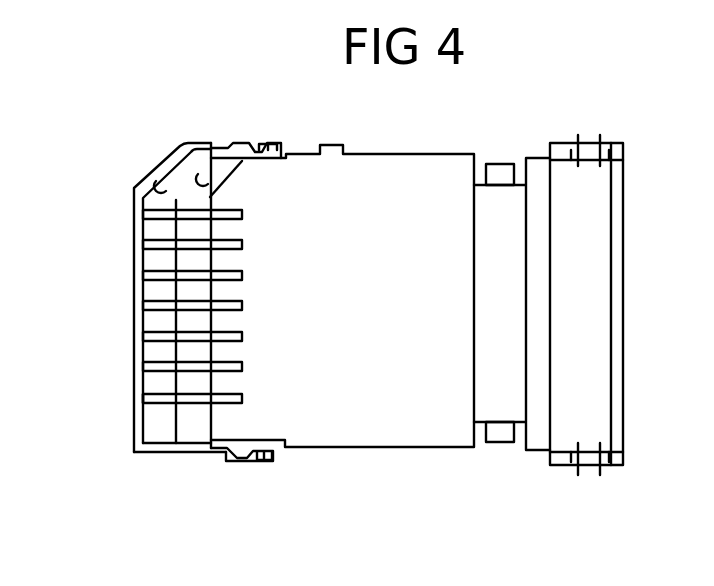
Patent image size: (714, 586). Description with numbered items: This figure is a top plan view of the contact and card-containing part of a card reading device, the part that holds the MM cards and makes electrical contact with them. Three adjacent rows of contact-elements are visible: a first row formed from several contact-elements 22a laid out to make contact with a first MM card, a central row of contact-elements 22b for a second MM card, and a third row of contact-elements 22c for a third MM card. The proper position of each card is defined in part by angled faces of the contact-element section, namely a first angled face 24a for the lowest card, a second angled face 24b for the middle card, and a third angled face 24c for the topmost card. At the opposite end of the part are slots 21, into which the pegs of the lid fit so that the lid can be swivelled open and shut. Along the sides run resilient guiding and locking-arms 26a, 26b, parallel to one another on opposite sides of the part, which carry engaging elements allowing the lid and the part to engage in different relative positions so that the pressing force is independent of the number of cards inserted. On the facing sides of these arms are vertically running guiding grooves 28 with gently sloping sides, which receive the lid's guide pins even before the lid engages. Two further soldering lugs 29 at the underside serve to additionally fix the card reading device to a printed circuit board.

The slots 21 is at (594, 140).
The contact-elements 22a is at (243, 398).
The contact-elements 22b is at (186, 410).
The contact-elements 22c is at (147, 397).
The first angled face 24a is at (230, 180).
The second angled face 24b is at (183, 163).
The third angled face 24c is at (153, 186).
The resilient guiding and locking-arm 26a is at (271, 143).
The resilient guiding and locking-arm 26b is at (262, 464).
The guiding grooves 28 is at (249, 143).
The soldering lugs 29 is at (500, 166).